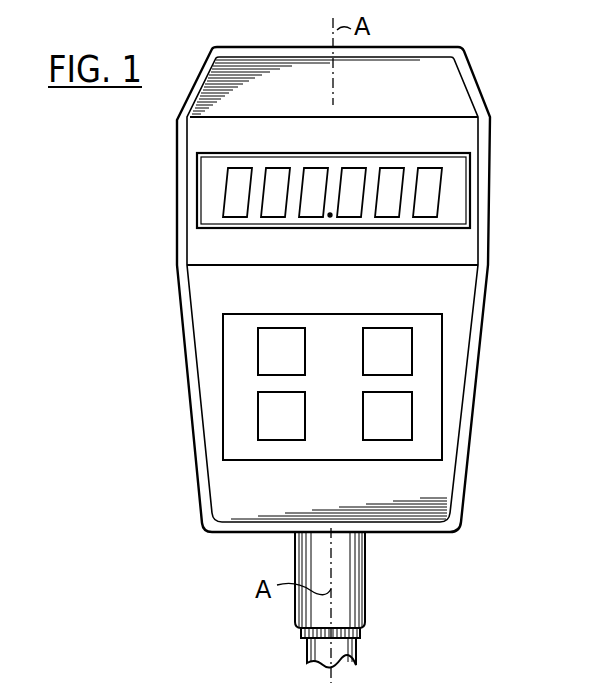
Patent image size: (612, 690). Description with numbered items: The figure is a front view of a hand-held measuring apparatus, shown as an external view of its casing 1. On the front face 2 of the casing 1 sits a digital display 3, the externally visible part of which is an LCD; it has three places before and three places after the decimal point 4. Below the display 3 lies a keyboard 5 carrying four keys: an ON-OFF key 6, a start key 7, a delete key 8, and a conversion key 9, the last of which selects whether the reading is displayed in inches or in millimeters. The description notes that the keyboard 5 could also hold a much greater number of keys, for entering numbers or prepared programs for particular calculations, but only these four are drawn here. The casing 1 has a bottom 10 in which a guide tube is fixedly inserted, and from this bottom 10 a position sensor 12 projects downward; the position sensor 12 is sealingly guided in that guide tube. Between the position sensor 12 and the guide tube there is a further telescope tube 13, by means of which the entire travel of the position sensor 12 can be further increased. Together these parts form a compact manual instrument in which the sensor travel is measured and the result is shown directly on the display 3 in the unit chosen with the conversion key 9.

The casing 1 is at (473, 87).
The front face 2 is at (465, 282).
The digital display 3 is at (458, 194).
The decimal point 4 is at (330, 218).
The keyboard 5 is at (430, 380).
The ON-OFF key 6 is at (258, 352).
The start key 7 is at (266, 415).
The delete key 8 is at (408, 343).
The conversion key 9 is at (408, 418).
The bottom 10 is at (388, 528).
The position sensor 12 is at (356, 655).
The telescope tube 13 is at (360, 633).